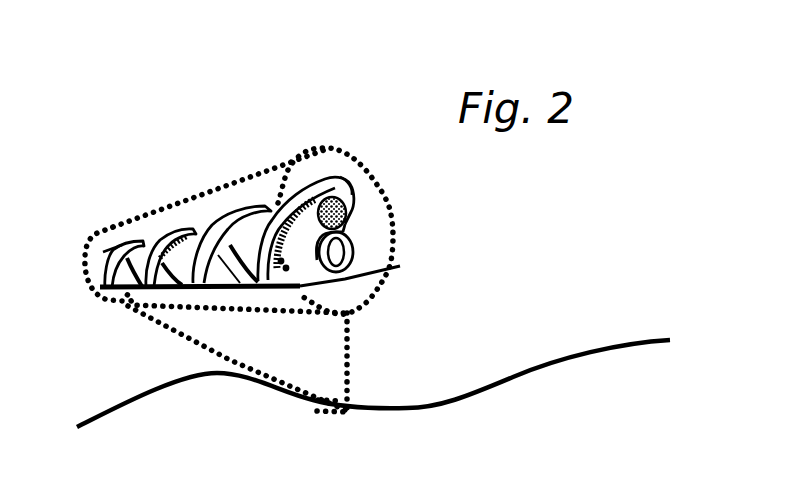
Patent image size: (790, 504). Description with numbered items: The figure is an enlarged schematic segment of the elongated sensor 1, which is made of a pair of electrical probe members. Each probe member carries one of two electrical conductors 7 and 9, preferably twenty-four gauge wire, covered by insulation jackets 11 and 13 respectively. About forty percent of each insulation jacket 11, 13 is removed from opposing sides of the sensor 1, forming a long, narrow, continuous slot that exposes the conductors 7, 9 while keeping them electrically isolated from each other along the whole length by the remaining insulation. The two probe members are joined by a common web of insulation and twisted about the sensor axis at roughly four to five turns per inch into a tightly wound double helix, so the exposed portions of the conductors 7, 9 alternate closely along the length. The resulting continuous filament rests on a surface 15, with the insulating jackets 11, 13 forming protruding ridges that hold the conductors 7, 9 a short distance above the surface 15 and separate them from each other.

The elongated sensor 1 is at (347, 78).
The electrical conductor 7 is at (410, 146).
The insulation jacket 11 is at (425, 183).
The electrical conductor 9 is at (440, 213).
The insulation jacket 13 is at (455, 240).
The surface 15 is at (452, 277).